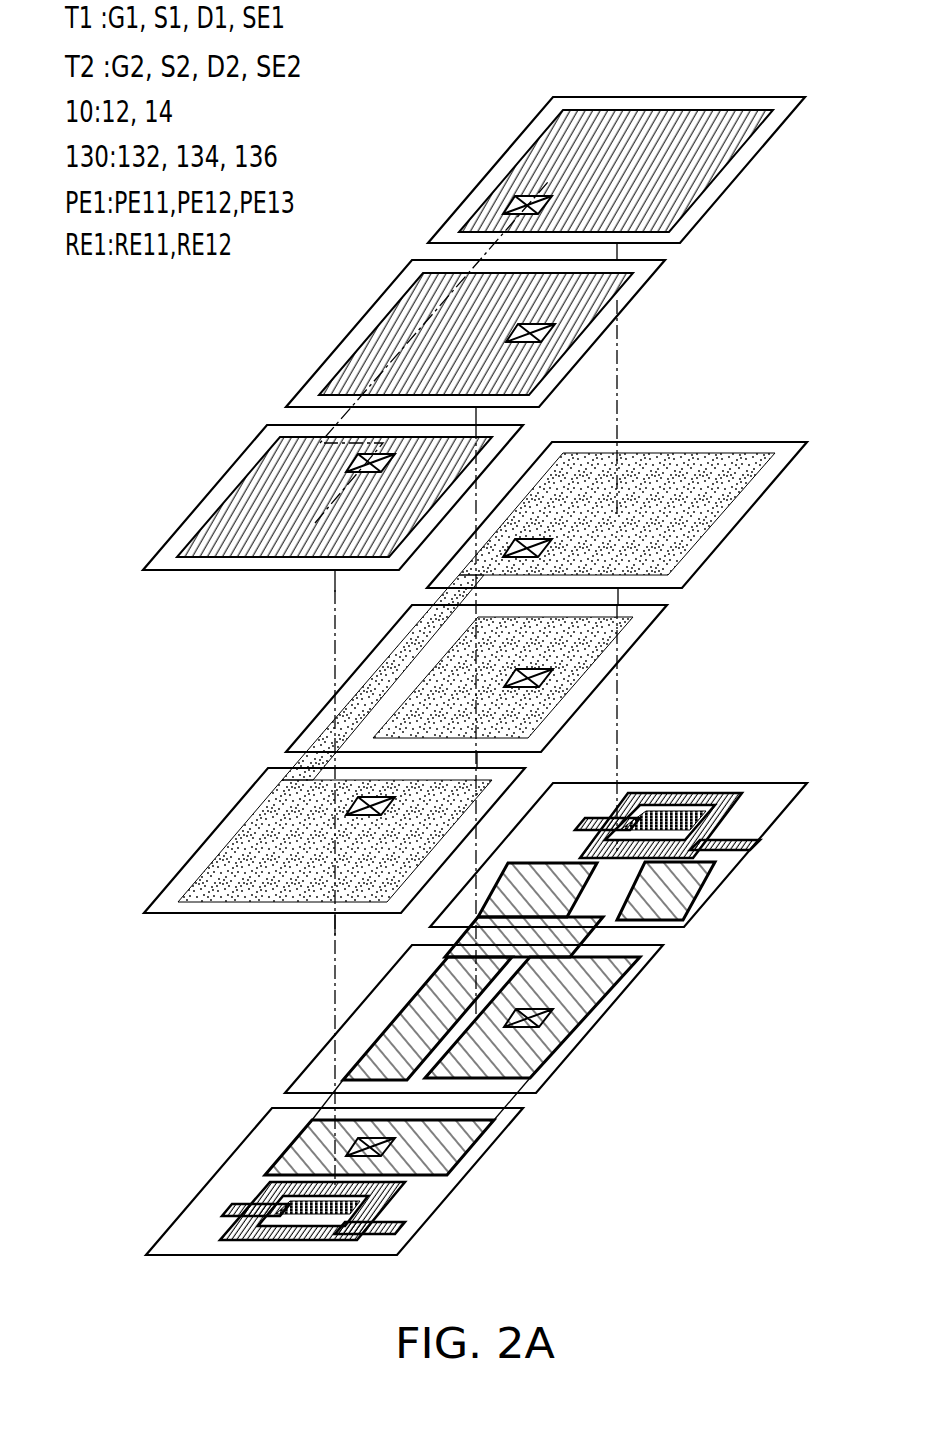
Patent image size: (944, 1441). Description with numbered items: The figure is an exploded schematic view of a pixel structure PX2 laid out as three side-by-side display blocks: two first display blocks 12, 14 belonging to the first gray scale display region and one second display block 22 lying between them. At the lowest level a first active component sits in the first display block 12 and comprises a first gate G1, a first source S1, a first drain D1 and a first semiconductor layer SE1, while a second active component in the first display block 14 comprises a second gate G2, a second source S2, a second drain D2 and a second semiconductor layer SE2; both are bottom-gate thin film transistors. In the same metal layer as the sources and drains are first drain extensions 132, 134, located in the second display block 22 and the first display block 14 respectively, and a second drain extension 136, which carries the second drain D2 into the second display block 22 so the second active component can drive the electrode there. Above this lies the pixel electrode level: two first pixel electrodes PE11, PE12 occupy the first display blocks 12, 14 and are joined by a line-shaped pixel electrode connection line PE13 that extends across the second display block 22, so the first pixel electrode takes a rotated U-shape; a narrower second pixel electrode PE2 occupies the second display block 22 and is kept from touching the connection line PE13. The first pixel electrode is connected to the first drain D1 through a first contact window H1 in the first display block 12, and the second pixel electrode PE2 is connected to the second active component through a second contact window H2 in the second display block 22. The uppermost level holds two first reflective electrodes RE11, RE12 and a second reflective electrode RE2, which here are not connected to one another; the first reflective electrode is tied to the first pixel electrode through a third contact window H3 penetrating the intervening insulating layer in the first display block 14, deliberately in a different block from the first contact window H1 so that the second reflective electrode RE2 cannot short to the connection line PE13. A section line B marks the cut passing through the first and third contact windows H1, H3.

The first display block 12 is at (192, 516).
The first display block 14 is at (450, 222).
The second display block 22 is at (332, 355).
The first reflective electrode RE12 is at (545, 133).
The second reflective electrode RE2 is at (405, 297).
The first reflective electrode RE11 is at (262, 460).
The first pixel electrode PE12 is at (753, 477).
The pixel electrode connection line PE13 is at (388, 655).
The second pixel electrode PE2 is at (623, 635).
The first pixel electrode PE11 is at (262, 805).
The first contact window H1 is at (348, 465).
The second contact window H2 is at (543, 337).
The third contact window H3 is at (510, 200).
The section line B-B' B is at (312, 528).
The first drain extension 132 is at (378, 1007).
The first drain extension 134 is at (462, 907).
The second drain extension 136 is at (554, 1058).
The first gate G1 is at (317, 1218).
The first source S1 is at (375, 1227).
The first drain D1 is at (262, 1227).
The first semiconductor layer SE1 is at (293, 1220).
The second gate G2 is at (725, 793).
The second source S2 is at (743, 810).
The second drain D2 is at (622, 813).
The second semiconductor layer SE2 is at (670, 818).
The pixel structure PX2 is at (825, 1300).